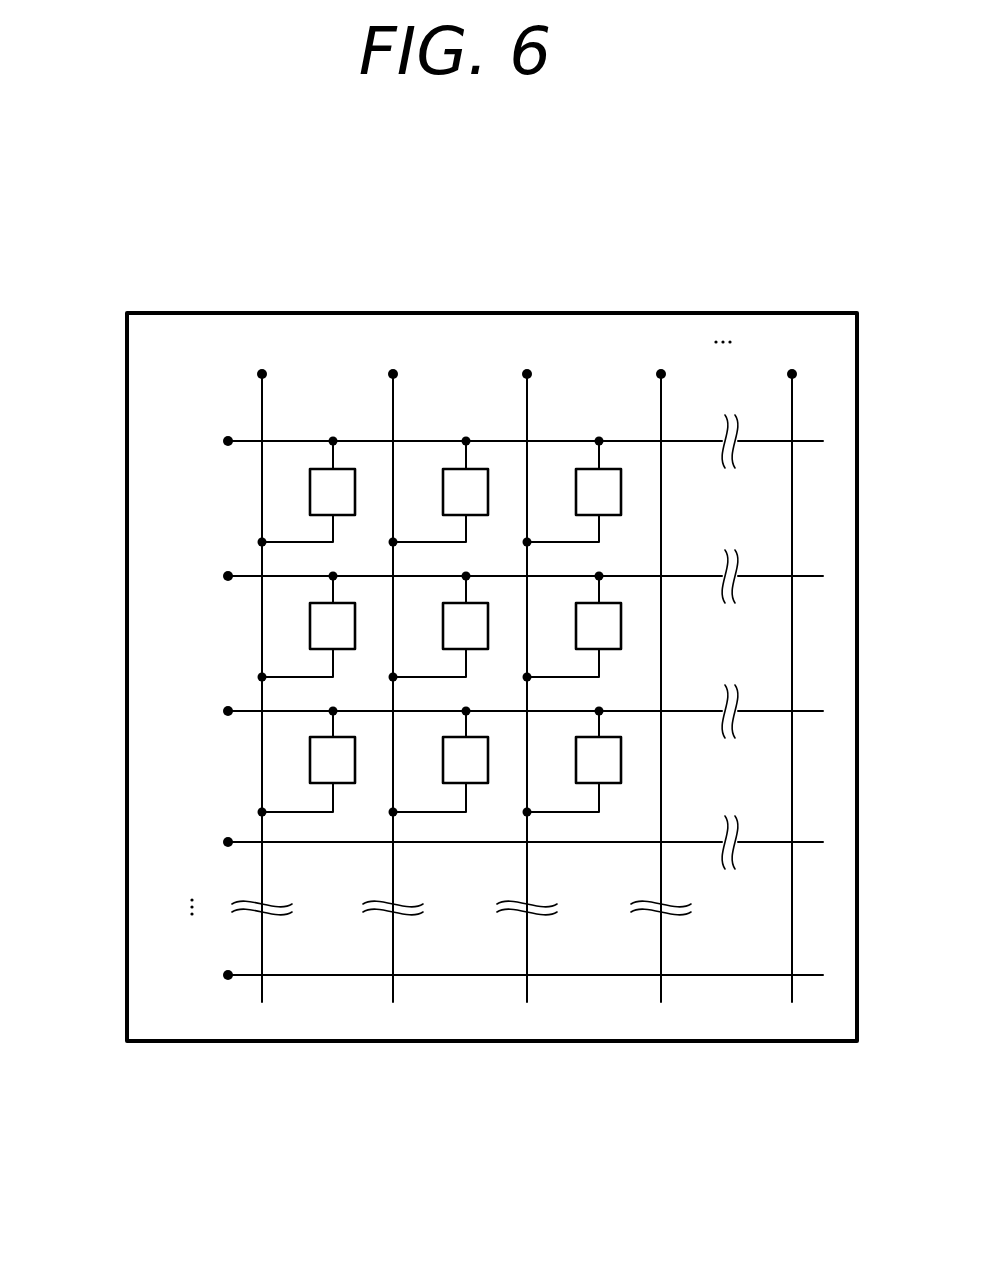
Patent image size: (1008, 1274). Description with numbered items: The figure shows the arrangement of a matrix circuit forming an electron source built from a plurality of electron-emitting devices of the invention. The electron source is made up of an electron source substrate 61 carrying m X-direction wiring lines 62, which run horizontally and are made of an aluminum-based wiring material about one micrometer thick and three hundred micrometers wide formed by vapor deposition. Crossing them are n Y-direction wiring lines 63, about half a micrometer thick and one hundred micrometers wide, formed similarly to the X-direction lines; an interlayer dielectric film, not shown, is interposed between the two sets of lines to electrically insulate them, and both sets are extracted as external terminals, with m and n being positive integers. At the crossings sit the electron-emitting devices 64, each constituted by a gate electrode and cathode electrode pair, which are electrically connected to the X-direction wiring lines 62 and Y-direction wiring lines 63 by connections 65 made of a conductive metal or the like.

The electron source substrate 61 is at (820, 1015).
The X-direction wiring lines 62 is at (118, 432).
The Y-direction wiring lines 63 is at (228, 302).
The electron-emitting devices 64 is at (612, 783).
The connections 65 is at (307, 812).